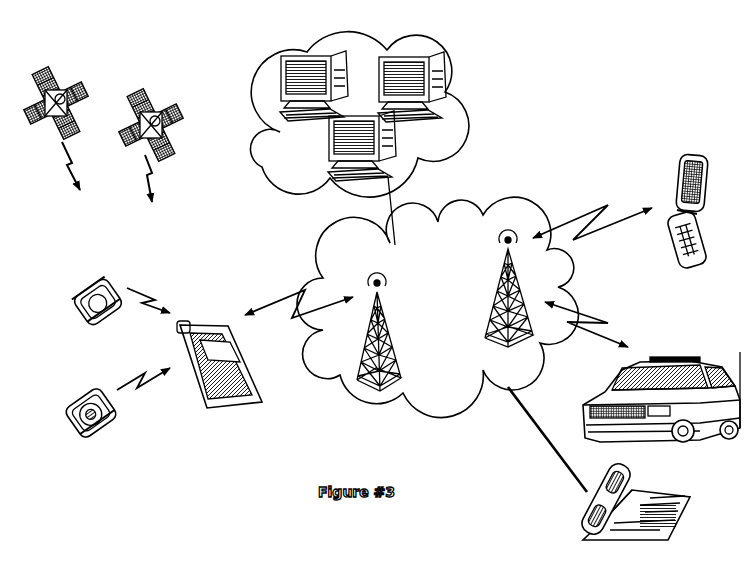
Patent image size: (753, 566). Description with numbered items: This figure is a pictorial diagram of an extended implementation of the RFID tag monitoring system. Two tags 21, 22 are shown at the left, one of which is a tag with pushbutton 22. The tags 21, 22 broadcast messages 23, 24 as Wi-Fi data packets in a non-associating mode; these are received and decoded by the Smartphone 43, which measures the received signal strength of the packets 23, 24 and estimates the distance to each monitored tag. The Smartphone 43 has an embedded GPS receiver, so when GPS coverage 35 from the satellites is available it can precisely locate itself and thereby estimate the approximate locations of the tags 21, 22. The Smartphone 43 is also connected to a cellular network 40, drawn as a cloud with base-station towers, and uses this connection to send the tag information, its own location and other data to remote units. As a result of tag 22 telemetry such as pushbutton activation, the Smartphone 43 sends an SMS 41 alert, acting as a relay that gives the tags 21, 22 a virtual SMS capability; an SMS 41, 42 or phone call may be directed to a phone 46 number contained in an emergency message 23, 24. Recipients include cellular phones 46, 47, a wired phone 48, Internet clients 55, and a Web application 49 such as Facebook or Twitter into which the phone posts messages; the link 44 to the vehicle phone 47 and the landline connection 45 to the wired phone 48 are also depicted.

The tag 21 is at (80, 322).
The tag with pushbutton 22 is at (105, 423).
The broadcast message 23 is at (140, 285).
The broadcast message 24 is at (155, 383).
The GPS coverage 35 is at (82, 113).
The cellular network 40 is at (437, 307).
The SMS 41 is at (268, 312).
The SMS 42 is at (595, 207).
The Smartphone 43 is at (265, 376).
The wireless link to vehicle 44 is at (598, 310).
The landline connection 45 is at (552, 453).
The cellular phone 46 is at (700, 262).
The cellular phone 47 is at (608, 397).
The wired phone 48 is at (686, 518).
The Web application 49 is at (367, 114).
The Internet clients 55 is at (440, 66).